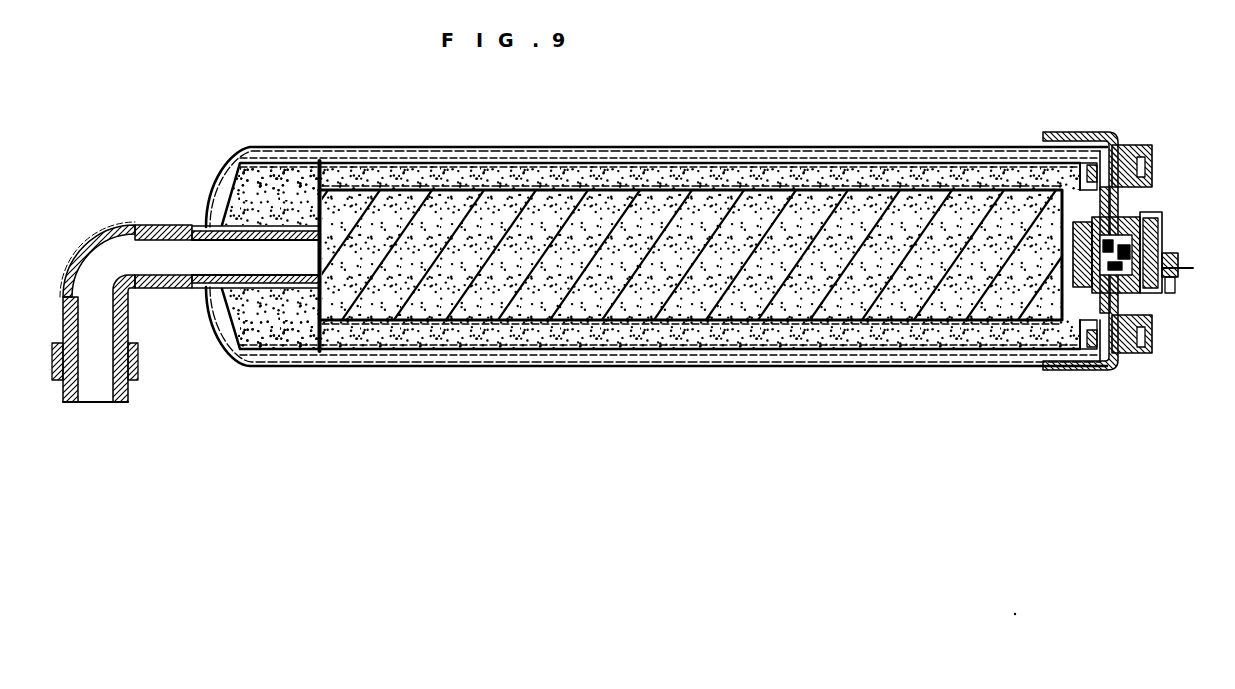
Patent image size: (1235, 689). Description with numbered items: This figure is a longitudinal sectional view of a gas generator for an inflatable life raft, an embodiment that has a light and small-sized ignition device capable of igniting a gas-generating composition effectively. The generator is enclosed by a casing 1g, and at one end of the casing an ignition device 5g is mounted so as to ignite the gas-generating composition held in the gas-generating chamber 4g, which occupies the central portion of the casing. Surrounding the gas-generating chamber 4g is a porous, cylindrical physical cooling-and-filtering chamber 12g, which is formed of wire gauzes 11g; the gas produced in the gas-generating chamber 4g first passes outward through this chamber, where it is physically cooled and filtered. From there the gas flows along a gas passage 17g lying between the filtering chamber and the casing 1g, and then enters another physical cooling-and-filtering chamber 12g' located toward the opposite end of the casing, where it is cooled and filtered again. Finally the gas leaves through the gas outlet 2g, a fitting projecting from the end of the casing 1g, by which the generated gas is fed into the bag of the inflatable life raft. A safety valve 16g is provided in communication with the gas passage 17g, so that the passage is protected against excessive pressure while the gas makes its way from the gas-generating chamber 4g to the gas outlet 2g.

The casing 1g is at (717, 149).
The gas outlet 2g is at (97, 388).
The gas-generating chamber 4g is at (703, 290).
The ignition device 5g is at (1163, 236).
The wire gauzes 11g is at (591, 190).
The physical cooling-and-filtering chamber 12g is at (659, 258).
The physical cooling-and-filtering chamber 12g' is at (271, 354).
The safety valve 16g is at (1148, 165).
The gas passage 17g is at (865, 355).